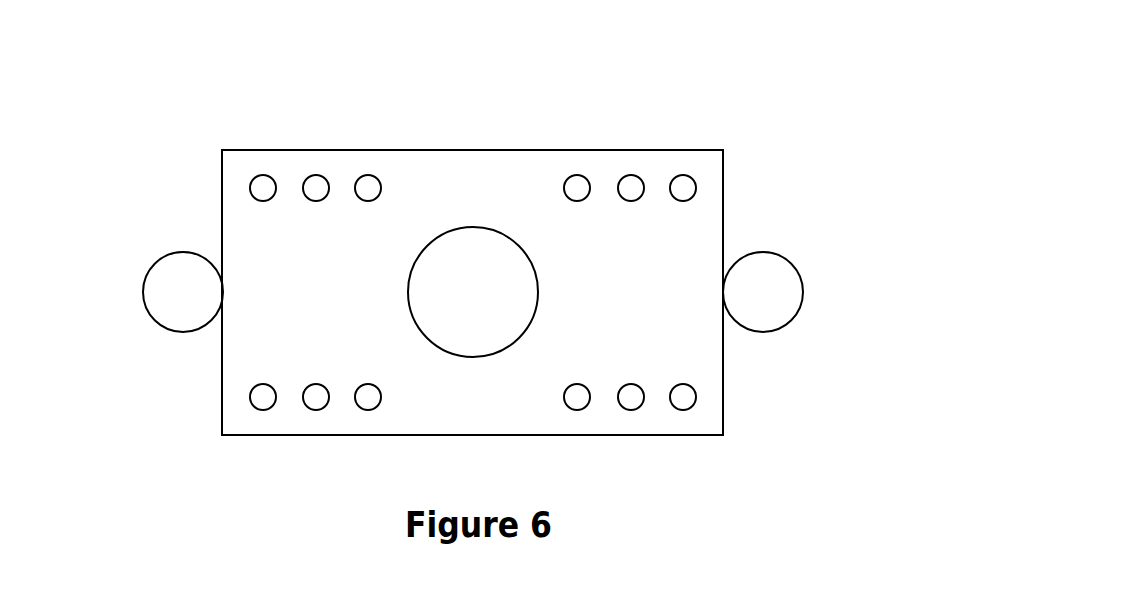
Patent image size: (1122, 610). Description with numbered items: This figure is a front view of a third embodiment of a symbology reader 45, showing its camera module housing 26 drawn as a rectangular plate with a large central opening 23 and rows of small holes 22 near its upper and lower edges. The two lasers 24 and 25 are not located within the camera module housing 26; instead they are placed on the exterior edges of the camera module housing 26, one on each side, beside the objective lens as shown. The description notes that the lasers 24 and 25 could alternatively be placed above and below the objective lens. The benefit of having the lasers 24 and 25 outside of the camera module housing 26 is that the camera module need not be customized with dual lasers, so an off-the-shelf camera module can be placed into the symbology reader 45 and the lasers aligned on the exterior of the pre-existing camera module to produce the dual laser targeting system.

The symbology reader 45 is at (762, 47).
The camera module housing 26 is at (511, 268).
The fastener holes 22 is at (510, 313).
The central aperture 23 is at (500, 231).
The laser 24 is at (128, 264).
The laser 25 is at (823, 265).